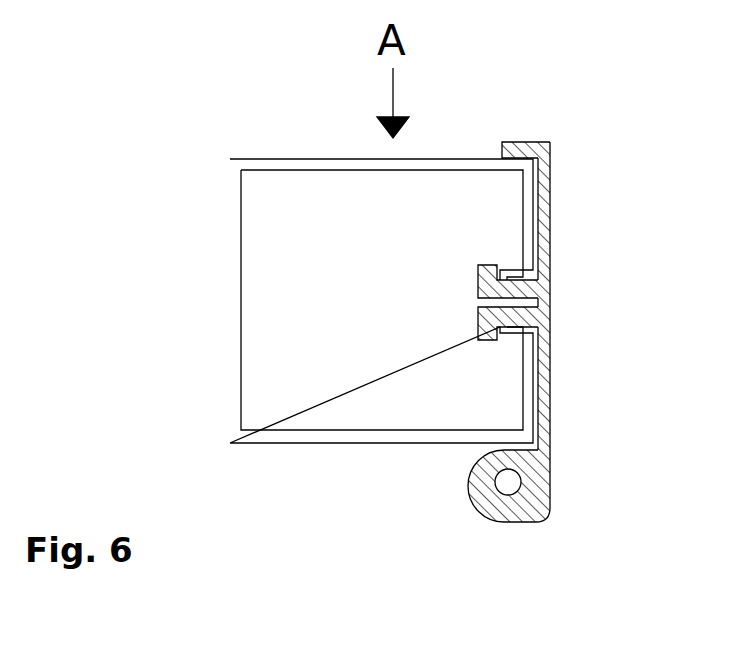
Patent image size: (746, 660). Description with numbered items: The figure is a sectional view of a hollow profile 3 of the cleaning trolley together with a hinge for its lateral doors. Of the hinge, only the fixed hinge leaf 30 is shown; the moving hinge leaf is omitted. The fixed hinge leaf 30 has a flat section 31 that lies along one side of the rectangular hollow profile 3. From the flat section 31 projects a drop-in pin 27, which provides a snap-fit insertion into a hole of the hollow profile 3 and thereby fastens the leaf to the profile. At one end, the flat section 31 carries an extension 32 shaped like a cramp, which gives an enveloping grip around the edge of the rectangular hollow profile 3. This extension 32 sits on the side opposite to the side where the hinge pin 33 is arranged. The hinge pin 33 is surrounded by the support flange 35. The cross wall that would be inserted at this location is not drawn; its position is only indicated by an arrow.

The hollow profile 3 is at (233, 245).
The drop-in pin 27 is at (480, 283).
The fixed hinge leaf 30 is at (542, 445).
The flat section 31 is at (543, 238).
The extension 32 is at (520, 142).
The hinge pin 33 is at (515, 482).
The support flange 35 is at (513, 508).